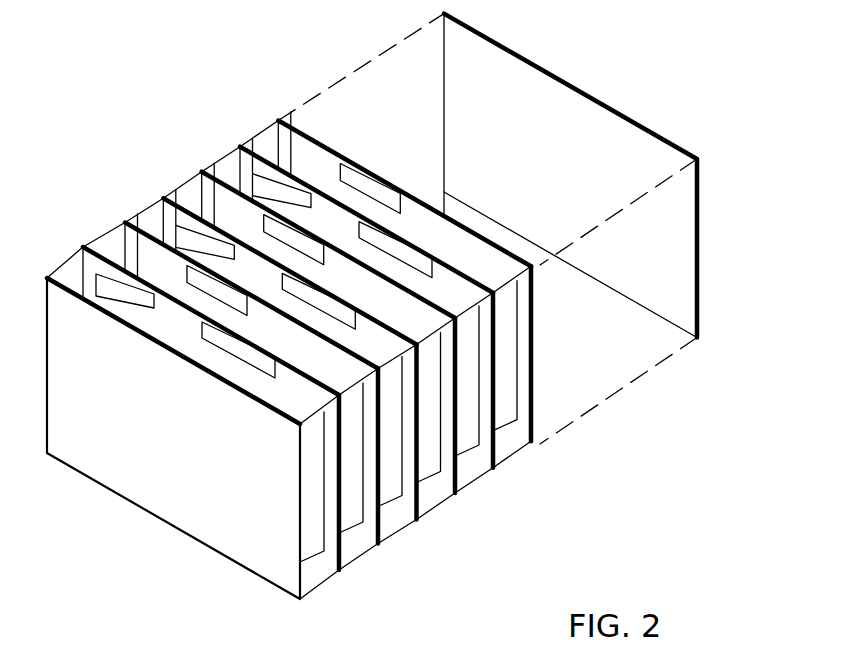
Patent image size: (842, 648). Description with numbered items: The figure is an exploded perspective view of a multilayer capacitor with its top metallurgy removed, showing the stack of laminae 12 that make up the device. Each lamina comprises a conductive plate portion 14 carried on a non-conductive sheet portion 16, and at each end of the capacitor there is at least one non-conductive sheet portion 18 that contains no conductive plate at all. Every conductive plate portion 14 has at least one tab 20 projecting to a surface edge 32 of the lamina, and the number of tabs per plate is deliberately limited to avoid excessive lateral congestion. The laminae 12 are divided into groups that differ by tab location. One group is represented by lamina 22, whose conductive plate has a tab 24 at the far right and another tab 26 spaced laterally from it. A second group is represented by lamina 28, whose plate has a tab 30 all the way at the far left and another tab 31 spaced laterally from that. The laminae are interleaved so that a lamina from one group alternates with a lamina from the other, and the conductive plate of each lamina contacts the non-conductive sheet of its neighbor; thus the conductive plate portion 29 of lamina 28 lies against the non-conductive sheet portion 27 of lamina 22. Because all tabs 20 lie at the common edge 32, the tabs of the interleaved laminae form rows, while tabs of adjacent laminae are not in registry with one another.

The laminae 12 is at (240, 146).
The conductive plate portion 14 is at (334, 236).
The non-conductive sheet portion 16 is at (524, 411).
The non-conductive sheet portion 18 is at (674, 229).
The tab 20 is at (322, 152).
The lamina 22 is at (342, 578).
The tab 24 is at (293, 380).
The tab 26 is at (187, 317).
The non-conductive sheet portion 27 is at (332, 554).
The lamina 28 is at (383, 558).
The conductive plate portion 29 is at (352, 477).
The tab 30 is at (152, 226).
The tab 31 is at (270, 317).
The surface edge 32 is at (445, 211).